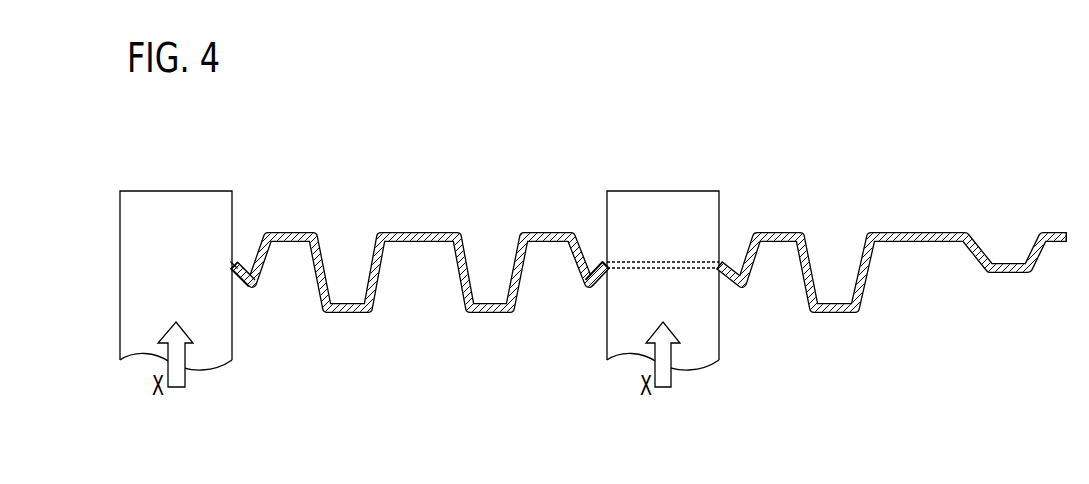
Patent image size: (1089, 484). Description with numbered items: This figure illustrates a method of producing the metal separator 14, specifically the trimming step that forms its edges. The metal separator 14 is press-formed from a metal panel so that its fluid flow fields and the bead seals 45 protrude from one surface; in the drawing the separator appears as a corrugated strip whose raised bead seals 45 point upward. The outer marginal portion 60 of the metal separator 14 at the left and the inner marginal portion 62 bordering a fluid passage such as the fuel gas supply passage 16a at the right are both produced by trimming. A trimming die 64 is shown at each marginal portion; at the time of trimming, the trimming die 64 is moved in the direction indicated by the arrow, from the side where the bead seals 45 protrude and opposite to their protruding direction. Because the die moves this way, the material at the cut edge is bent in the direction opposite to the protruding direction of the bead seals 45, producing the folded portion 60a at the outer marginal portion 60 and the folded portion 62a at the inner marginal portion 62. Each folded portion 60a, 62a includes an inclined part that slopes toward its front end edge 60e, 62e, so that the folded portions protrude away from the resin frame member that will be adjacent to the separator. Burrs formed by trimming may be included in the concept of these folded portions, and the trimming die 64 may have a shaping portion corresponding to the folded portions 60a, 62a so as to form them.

The trimming die 64 is at (192, 194).
The bead seal 45 is at (320, 297).
The outer marginal portion 60 is at (244, 260).
The front end edge 60e is at (231, 263).
The folded portion 60a is at (240, 279).
The inner marginal portion 62 is at (597, 260).
The front end edge 62e is at (608, 265).
The folded portion 62a is at (596, 284).
The metal separator 14 is at (774, 228).
The fuel gas supply passage 16a is at (690, 262).